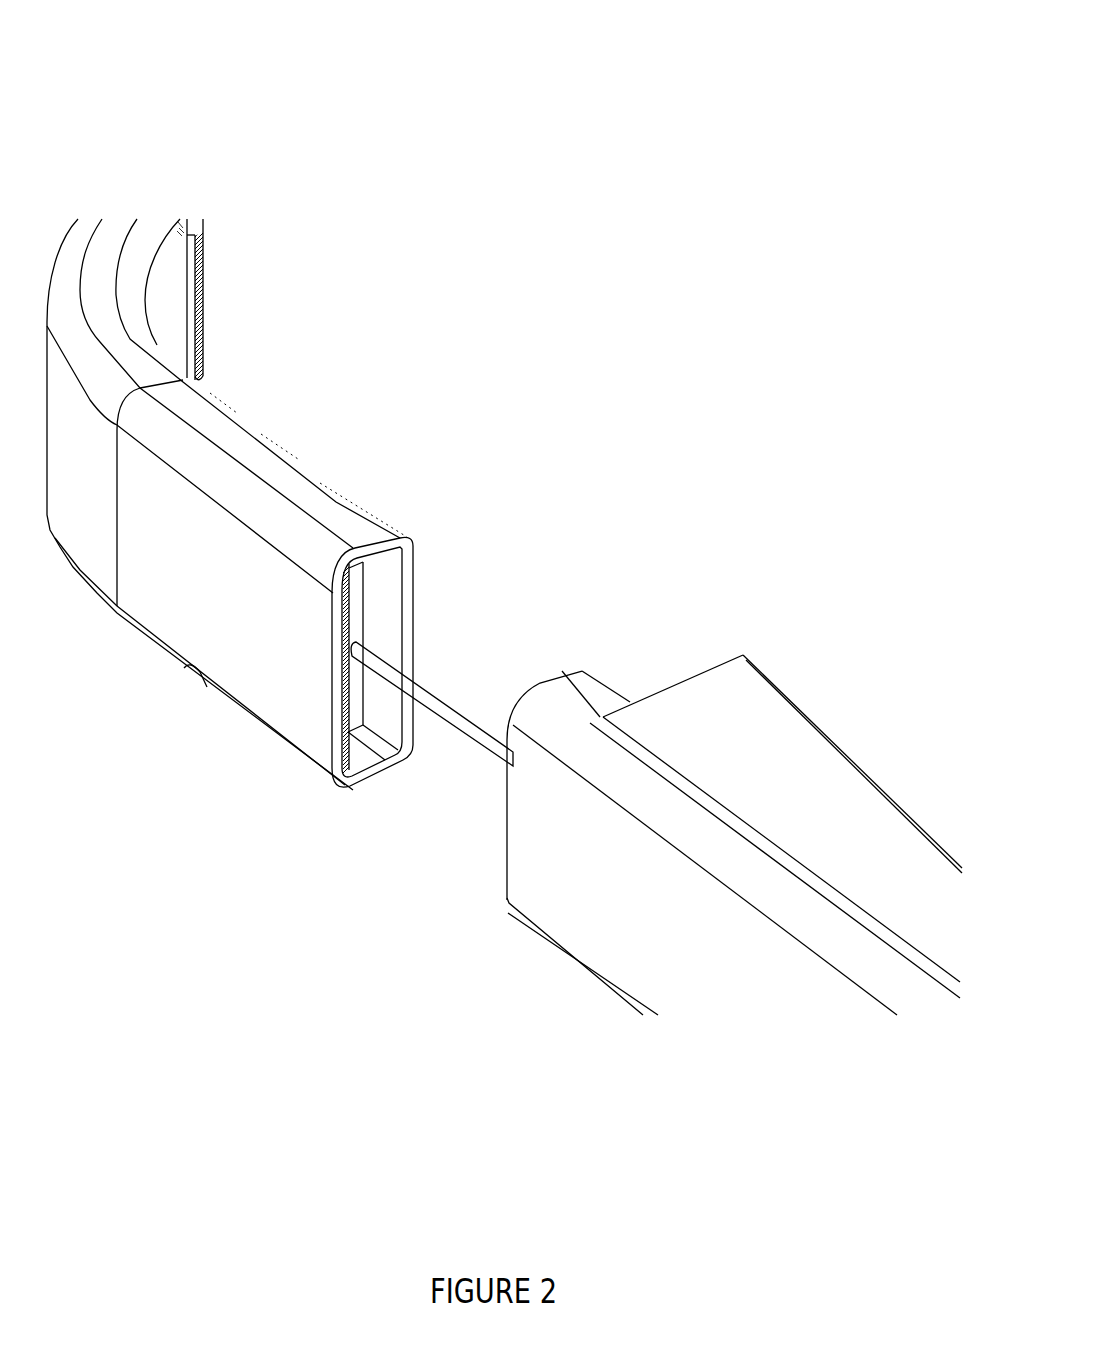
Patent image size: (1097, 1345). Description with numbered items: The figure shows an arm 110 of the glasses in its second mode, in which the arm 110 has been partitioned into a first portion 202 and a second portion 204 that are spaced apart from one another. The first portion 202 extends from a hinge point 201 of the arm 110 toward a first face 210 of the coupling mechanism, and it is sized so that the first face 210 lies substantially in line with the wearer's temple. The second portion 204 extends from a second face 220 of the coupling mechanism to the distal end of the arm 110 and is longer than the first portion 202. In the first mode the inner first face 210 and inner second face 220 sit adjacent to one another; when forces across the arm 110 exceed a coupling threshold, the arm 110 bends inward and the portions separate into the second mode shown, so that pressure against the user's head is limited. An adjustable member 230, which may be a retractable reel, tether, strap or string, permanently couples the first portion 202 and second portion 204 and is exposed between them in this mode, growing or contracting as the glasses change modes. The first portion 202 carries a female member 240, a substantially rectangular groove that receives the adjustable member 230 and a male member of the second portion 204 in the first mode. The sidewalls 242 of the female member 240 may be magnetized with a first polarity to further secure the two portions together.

The arm 110 is at (93, 100).
The hinge point 201 is at (148, 378).
The first portion 202 is at (218, 446).
The second portion 204 is at (702, 830).
The first face 210 is at (420, 572).
The second face 220 is at (565, 668).
The adjustable member 230 is at (448, 727).
The female member 240 is at (370, 622).
The sidewalls 242 is at (355, 598).